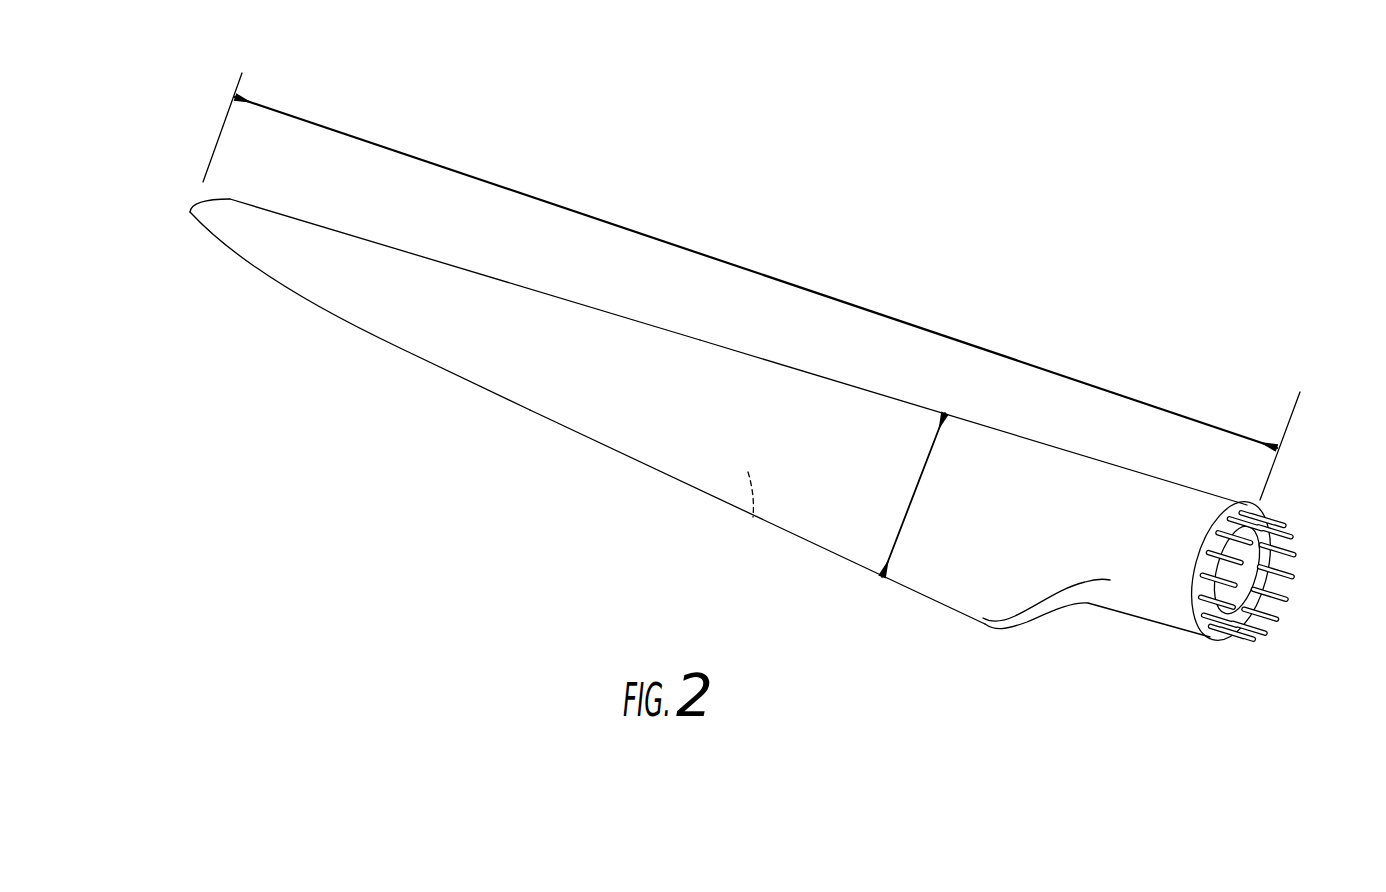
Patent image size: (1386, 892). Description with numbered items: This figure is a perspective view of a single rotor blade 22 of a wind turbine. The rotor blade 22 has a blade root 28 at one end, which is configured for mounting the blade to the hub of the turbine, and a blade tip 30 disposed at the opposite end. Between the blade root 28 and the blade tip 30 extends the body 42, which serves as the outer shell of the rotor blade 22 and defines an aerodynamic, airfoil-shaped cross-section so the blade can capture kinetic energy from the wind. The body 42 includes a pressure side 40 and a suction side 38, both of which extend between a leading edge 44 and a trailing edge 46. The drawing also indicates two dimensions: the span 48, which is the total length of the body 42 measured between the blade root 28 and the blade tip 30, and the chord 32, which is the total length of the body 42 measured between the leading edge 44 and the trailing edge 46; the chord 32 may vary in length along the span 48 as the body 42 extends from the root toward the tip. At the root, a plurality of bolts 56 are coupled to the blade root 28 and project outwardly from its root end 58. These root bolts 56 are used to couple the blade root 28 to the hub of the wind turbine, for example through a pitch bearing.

The rotor blade 22 is at (1108, 285).
The blade root 28 is at (1147, 620).
The blade tip 30 is at (190, 212).
The chord 32 is at (910, 510).
The suction side 38 is at (590, 340).
The pressure side 40 is at (753, 517).
The body 42 is at (488, 360).
The leading edge 44 is at (790, 362).
The trailing edge 46 is at (598, 447).
The span 48 is at (770, 277).
The bolts 56 is at (1287, 540).
The root end 58 is at (1214, 640).